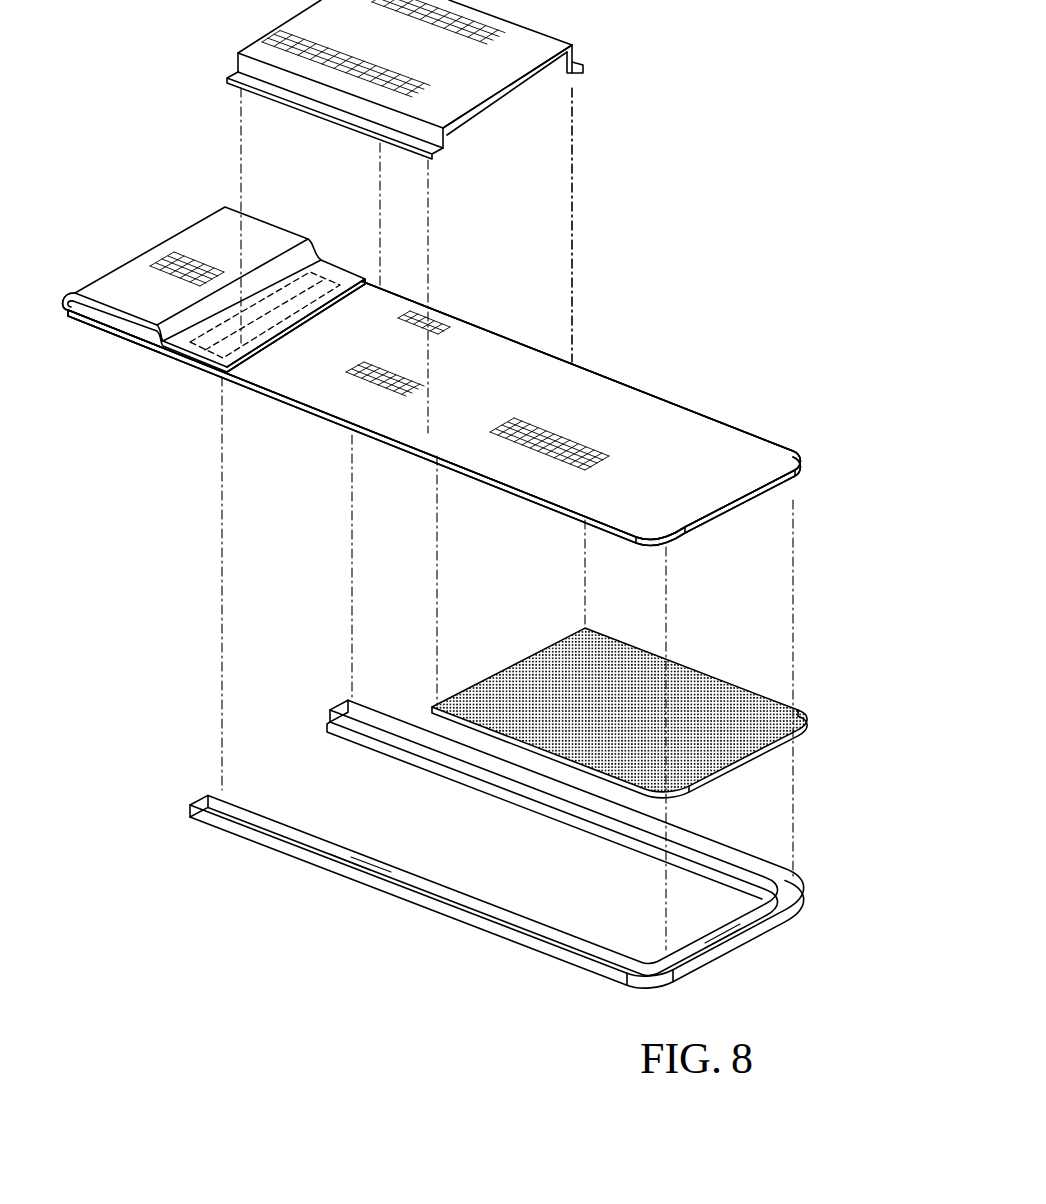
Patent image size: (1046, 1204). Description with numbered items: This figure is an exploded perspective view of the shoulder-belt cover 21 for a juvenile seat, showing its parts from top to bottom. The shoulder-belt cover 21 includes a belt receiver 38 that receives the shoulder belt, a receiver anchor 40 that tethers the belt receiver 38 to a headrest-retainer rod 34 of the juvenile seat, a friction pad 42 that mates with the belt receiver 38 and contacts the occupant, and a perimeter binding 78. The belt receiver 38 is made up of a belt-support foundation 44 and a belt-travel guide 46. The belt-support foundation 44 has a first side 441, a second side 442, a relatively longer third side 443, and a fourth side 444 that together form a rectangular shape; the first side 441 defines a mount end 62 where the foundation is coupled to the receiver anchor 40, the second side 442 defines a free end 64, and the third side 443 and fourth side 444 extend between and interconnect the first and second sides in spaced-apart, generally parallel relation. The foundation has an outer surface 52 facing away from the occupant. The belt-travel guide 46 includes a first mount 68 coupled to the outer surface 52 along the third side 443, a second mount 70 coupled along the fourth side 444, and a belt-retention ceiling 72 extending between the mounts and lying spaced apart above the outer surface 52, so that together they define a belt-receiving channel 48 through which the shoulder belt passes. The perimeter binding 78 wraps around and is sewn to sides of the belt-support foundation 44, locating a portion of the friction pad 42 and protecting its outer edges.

The shoulder-belt cover 21 is at (680, 125).
The headrest-retainer rod 34 is at (73, 322).
The belt receiver 38 is at (707, 305).
The receiver anchor 40 is at (96, 338).
The friction pad 42 is at (720, 695).
The belt-support foundation 44 is at (622, 372).
The belt-travel guide 46 is at (625, 190).
The belt-receiving channel 48 is at (445, 378).
The outer surface 52 is at (680, 425).
The mount end 62 is at (299, 305).
The free end 64 is at (748, 478).
The first mount 68 is at (440, 172).
The second mount 70 is at (583, 90).
The belt-retention ceiling 72 is at (395, 62).
The perimeter binding 78 is at (585, 968).
The first side 441 is at (273, 343).
The second side 442 is at (728, 512).
The third side 443 is at (321, 412).
The fourth side 444 is at (478, 325).